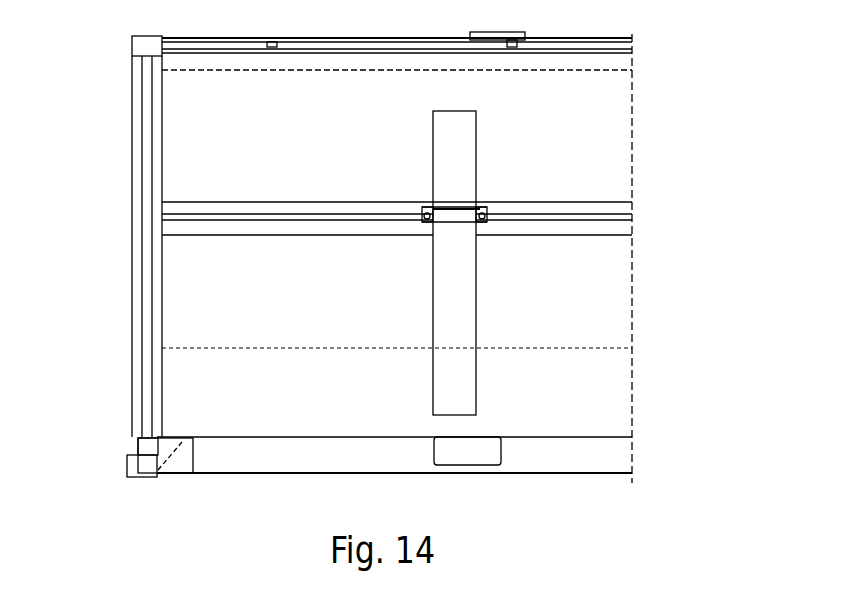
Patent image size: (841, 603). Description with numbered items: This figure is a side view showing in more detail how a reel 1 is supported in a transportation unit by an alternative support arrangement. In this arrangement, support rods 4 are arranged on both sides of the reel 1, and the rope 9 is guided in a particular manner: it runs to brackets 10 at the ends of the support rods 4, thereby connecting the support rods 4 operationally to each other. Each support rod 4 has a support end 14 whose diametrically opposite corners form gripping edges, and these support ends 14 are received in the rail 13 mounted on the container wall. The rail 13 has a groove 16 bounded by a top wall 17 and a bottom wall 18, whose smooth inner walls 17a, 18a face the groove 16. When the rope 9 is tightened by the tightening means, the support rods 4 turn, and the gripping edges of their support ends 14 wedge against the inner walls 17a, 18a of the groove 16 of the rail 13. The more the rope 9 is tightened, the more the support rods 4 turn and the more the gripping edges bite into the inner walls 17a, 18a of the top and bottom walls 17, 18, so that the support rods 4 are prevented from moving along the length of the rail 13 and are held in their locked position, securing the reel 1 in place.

The reel 1 is at (460, 158).
The support rod 4 is at (422, 218).
The rope 9 is at (452, 205).
The bracket 10 is at (483, 215).
The rail 13 is at (215, 188).
The support end 14 is at (422, 220).
The groove 16 is at (200, 218).
The top wall 17 is at (175, 213).
The inner wall of the top wall 17a is at (618, 217).
The bottom wall 18 is at (187, 223).
The inner wall of the bottom wall 18a is at (592, 220).